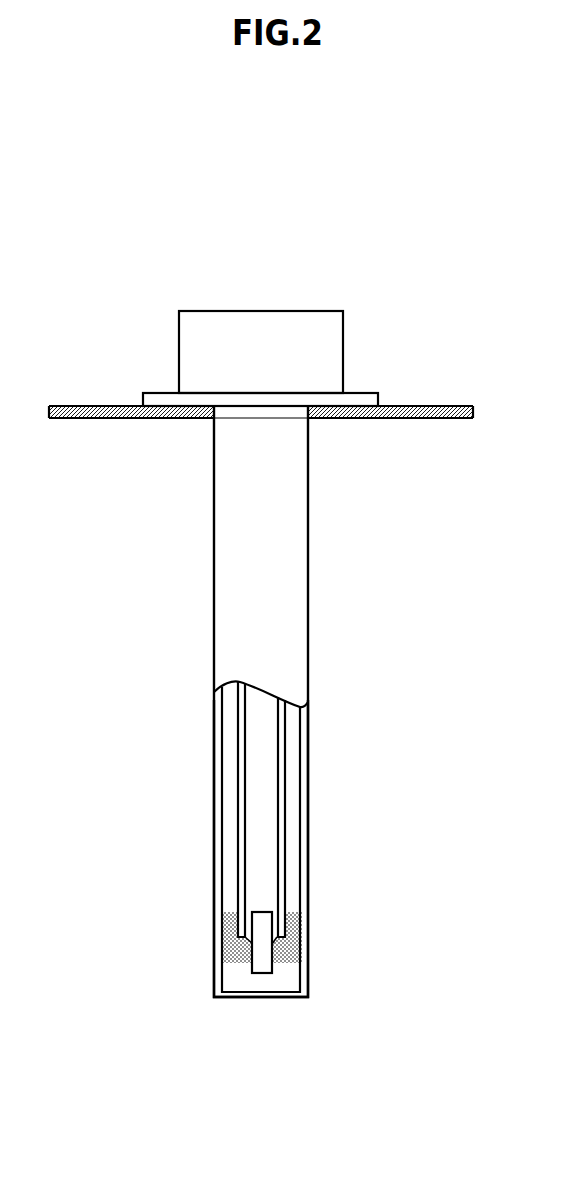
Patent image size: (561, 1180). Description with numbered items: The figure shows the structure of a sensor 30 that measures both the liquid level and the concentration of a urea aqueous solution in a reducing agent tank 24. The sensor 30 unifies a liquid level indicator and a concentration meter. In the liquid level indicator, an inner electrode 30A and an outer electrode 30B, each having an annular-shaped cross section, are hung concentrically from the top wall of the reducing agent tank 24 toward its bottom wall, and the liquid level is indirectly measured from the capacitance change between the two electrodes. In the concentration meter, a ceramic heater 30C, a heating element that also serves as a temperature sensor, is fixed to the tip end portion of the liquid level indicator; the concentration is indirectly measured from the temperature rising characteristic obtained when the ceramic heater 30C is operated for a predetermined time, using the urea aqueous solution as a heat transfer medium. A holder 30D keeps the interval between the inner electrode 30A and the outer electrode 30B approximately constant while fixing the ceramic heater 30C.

The reducing agent tank 24 is at (88, 407).
The sensor 30 is at (315, 532).
The inner electrode 30A is at (283, 780).
The outer electrode 30B is at (302, 835).
The ceramic heater 30C is at (263, 962).
The holder 30D is at (225, 940).